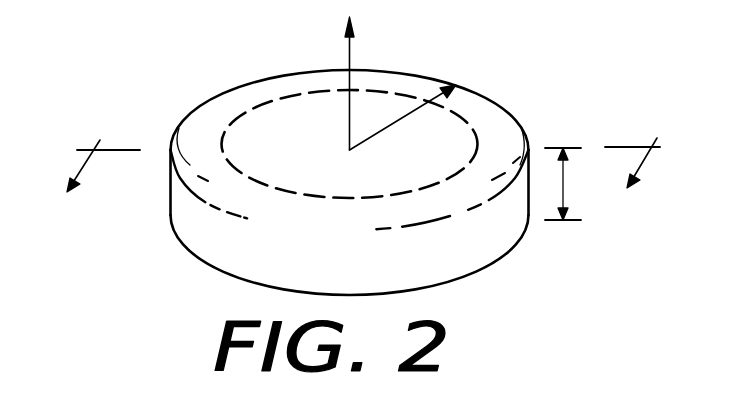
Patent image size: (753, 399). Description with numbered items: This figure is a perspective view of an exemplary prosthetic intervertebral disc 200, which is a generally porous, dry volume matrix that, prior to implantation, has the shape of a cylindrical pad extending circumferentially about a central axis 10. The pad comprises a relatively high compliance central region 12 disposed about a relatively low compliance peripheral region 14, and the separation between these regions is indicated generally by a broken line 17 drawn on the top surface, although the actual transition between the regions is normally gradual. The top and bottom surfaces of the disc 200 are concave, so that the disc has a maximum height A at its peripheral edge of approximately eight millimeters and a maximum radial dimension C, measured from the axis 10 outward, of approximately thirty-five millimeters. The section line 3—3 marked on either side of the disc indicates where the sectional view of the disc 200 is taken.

The central axis 10 is at (349, 52).
The central region 12 is at (350, 150).
The peripheral region 14 is at (494, 123).
The broken line 17 is at (252, 112).
The prosthetic intervertebral disc 200 is at (438, 44).
The maximum radial dimension C is at (392, 117).
The maximum height A is at (563, 184).
The section line 3- 3 is at (356, 179).